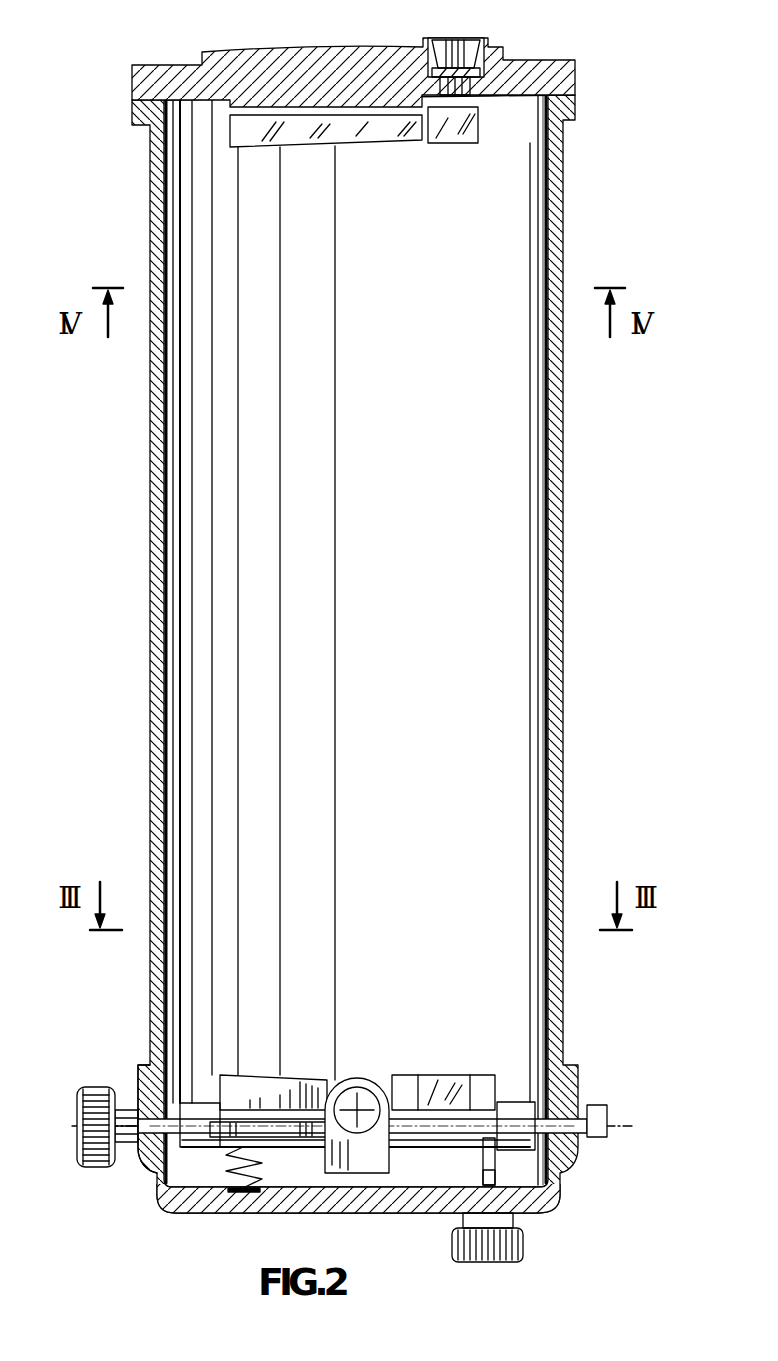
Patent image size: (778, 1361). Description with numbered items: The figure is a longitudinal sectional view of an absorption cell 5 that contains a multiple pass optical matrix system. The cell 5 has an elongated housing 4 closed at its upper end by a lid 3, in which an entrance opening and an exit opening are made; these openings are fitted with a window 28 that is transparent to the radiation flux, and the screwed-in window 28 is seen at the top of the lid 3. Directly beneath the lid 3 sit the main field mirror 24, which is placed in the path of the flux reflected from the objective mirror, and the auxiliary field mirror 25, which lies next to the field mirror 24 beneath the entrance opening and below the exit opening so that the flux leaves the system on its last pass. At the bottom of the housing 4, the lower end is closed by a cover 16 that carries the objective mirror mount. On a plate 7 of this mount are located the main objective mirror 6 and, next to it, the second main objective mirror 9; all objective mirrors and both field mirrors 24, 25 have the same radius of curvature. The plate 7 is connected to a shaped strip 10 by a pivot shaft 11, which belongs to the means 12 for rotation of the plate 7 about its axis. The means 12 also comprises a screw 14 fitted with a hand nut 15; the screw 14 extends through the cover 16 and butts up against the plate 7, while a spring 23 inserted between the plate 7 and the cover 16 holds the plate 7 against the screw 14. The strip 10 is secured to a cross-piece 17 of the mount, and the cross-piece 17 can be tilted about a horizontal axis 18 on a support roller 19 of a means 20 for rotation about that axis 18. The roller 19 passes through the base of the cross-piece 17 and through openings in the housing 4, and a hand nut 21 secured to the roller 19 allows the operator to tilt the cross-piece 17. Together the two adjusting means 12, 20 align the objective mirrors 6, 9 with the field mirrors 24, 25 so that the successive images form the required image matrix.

The lid 3 is at (273, 61).
The housing 4 is at (565, 693).
The cell 5 is at (143, 699).
The main objective mirror 6 is at (472, 1085).
The plate 7 is at (500, 1116).
The main objective mirror 9 is at (292, 1076).
The shaped strip 10 is at (386, 1167).
The pivot shaft 11 is at (361, 1102).
The means for rotation of the plate 12 is at (349, 1095).
The screw 14 is at (482, 1168).
The hand nut 15 is at (524, 1241).
The cover 16 is at (173, 1209).
The cross-piece 17 is at (200, 1147).
The horizontal axis 18 is at (614, 1119).
The support roller 19 is at (132, 1107).
The means for rotation about the horizontal axis 20 is at (127, 1165).
The hand nut 21 is at (90, 1170).
The spring 23 is at (263, 1170).
The main field mirror 24 is at (236, 129).
The auxiliary field mirror 25 is at (469, 141).
The window 28 is at (470, 45).